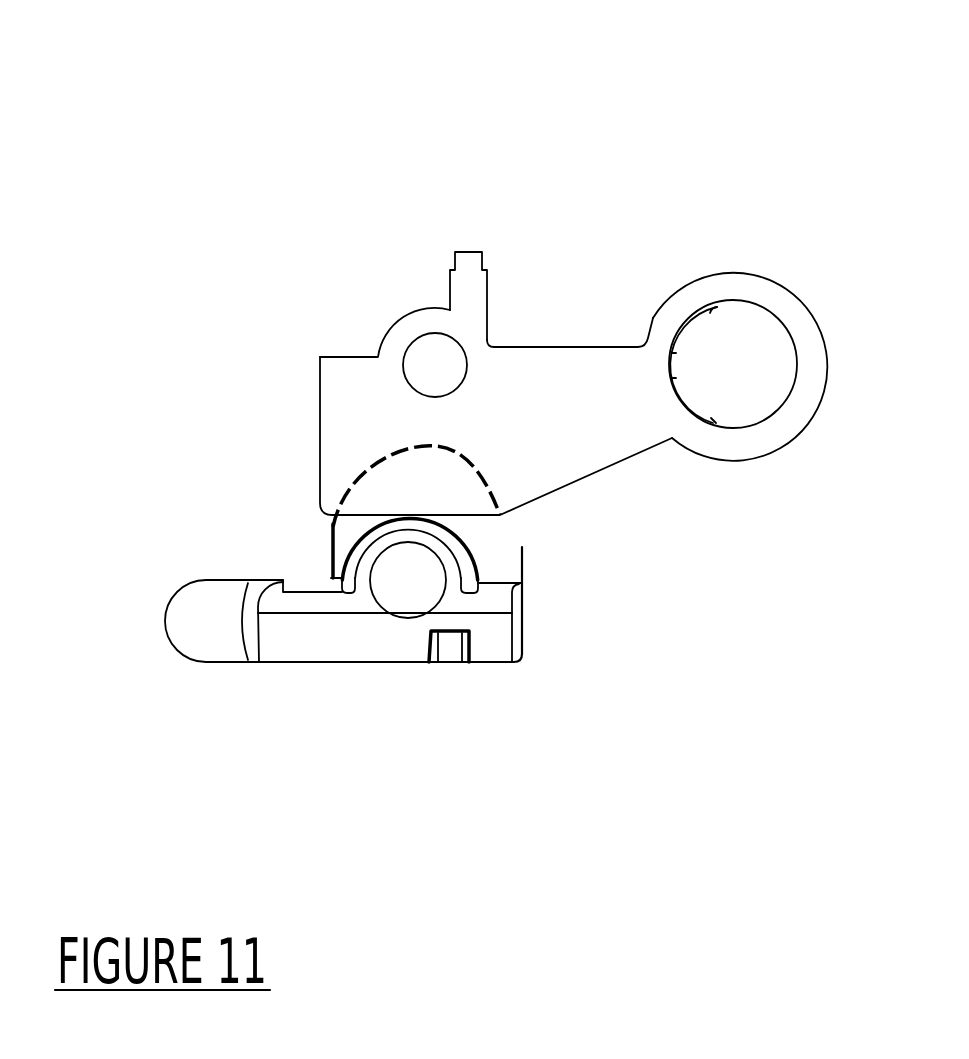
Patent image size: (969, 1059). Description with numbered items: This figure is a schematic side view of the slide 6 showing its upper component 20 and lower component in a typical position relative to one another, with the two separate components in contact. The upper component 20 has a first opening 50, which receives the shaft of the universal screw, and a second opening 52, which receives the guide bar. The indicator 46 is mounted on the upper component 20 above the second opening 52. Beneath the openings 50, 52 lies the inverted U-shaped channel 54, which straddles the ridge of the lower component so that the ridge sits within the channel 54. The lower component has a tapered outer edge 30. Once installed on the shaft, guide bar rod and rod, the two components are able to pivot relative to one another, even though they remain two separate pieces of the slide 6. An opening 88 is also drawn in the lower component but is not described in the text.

The slide 6 is at (492, 642).
The upper component 20 is at (557, 387).
The outer edge 30 is at (193, 623).
The indicator 46 is at (468, 243).
The first opening 50 is at (738, 365).
The second opening 52 is at (433, 360).
The inverted U-shaped channel 54 is at (353, 477).
The bore 88 is at (395, 598).